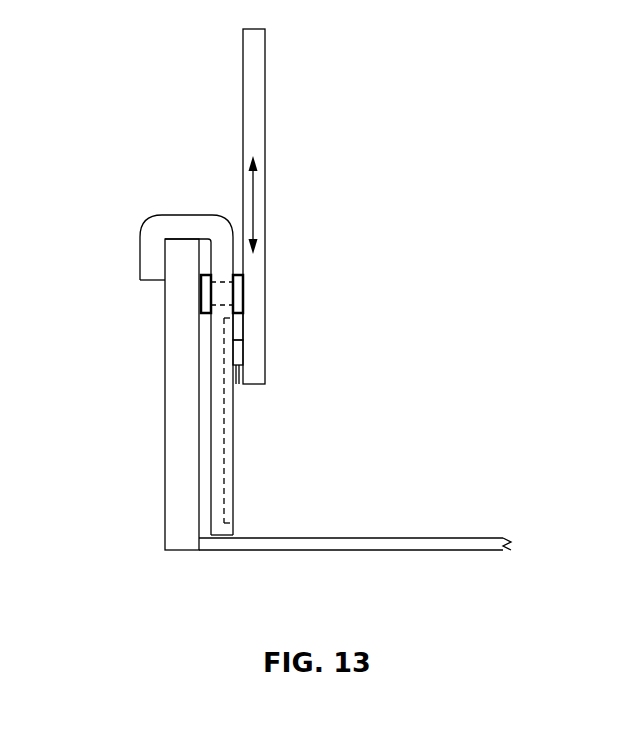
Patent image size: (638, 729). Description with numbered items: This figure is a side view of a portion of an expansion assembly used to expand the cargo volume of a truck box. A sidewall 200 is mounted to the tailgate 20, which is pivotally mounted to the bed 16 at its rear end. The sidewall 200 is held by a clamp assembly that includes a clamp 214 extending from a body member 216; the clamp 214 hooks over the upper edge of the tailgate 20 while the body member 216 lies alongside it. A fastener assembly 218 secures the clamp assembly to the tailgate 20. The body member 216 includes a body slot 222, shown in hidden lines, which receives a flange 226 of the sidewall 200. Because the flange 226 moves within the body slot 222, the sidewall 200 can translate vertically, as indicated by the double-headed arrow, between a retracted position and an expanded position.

The sidewall 200 is at (243, 89).
The clamp 214 is at (148, 226).
The tailgate 20 is at (180, 395).
The body member 216 is at (218, 514).
The fastener assembly 218 is at (238, 298).
The flange 226 is at (239, 368).
The body slot 222 is at (234, 498).
The bed 16 is at (334, 540).